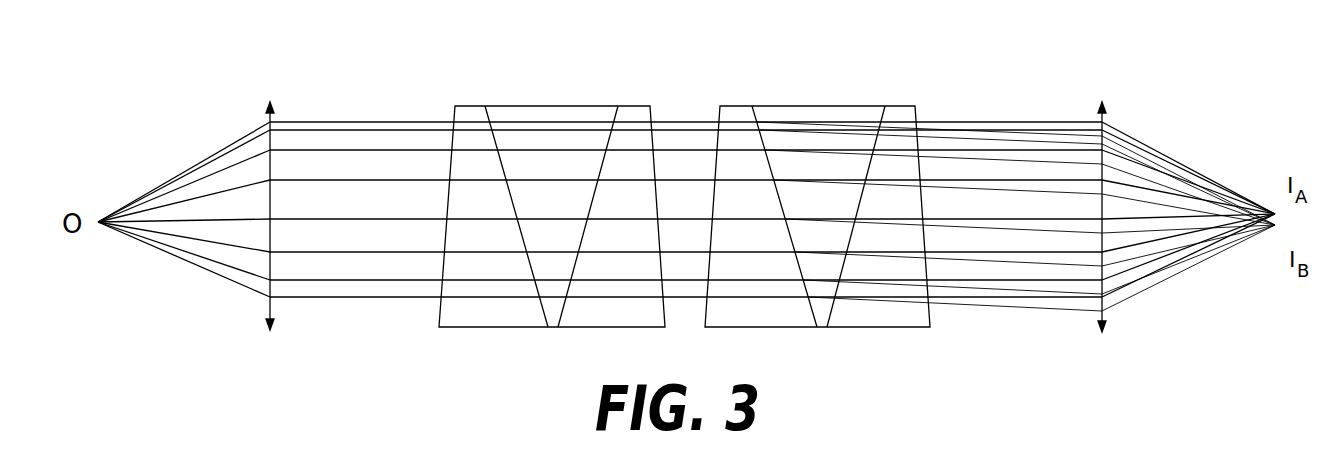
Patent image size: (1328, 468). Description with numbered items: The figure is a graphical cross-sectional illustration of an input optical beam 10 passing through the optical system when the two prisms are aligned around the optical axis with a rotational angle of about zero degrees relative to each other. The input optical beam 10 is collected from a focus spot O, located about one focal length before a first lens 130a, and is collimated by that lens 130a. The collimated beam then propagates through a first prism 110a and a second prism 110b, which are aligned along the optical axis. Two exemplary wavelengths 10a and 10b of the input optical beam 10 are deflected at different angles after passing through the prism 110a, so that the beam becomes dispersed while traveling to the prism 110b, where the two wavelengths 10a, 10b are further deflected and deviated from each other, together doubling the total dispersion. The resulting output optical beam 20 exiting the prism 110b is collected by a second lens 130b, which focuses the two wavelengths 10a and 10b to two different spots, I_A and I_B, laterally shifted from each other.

The input optical beam 10 is at (308, 123).
The first wavelength 10a is at (633, 122).
The second wavelength 10b is at (700, 133).
The output optical beam 20 is at (1203, 160).
The prism 110a is at (477, 105).
The prism 110b is at (737, 105).
The lens 130a is at (266, 315).
The lens 130b is at (1098, 316).